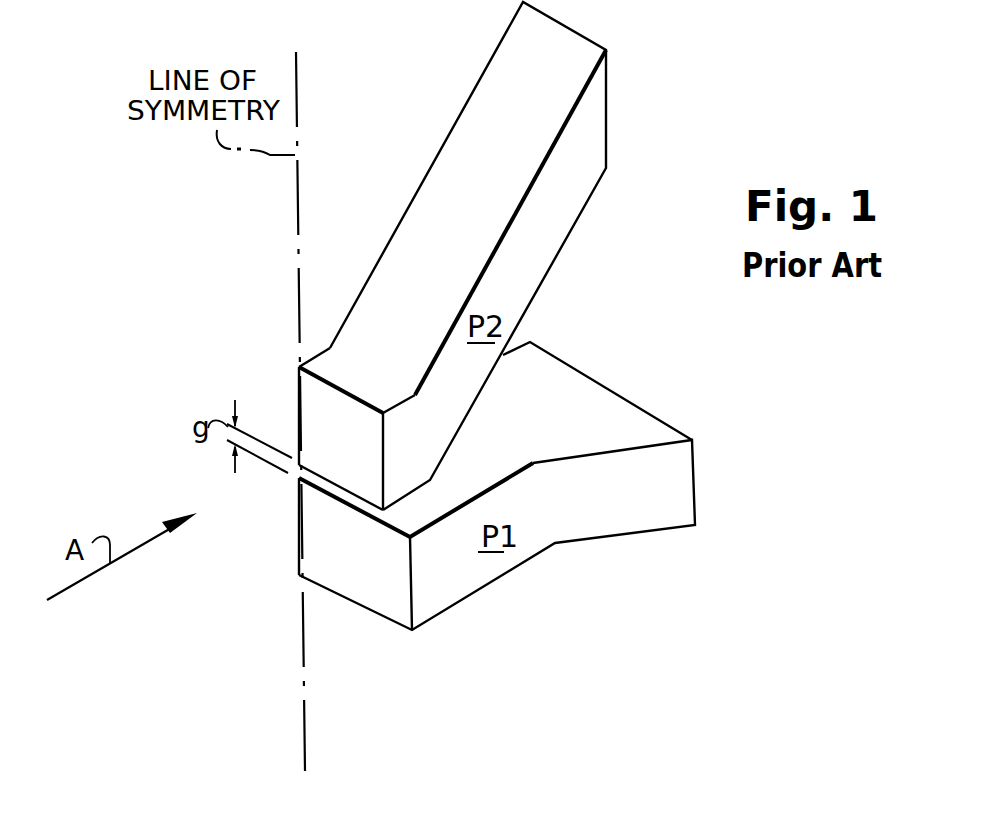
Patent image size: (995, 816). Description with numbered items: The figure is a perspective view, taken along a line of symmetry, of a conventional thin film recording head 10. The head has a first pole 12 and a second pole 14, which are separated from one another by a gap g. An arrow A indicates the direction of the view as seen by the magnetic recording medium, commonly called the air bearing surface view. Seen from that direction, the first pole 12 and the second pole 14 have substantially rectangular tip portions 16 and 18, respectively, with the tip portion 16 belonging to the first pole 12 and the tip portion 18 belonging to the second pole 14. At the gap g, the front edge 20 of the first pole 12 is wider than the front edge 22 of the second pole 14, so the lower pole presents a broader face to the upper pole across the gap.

The thin film recording head 10 is at (424, 163).
The first pole 12 is at (645, 395).
The second pole 14 is at (575, 244).
The tip portion 16 is at (340, 562).
The tip portion 18 is at (317, 402).
The front edge 20 is at (345, 508).
The front edge 22 is at (341, 476).